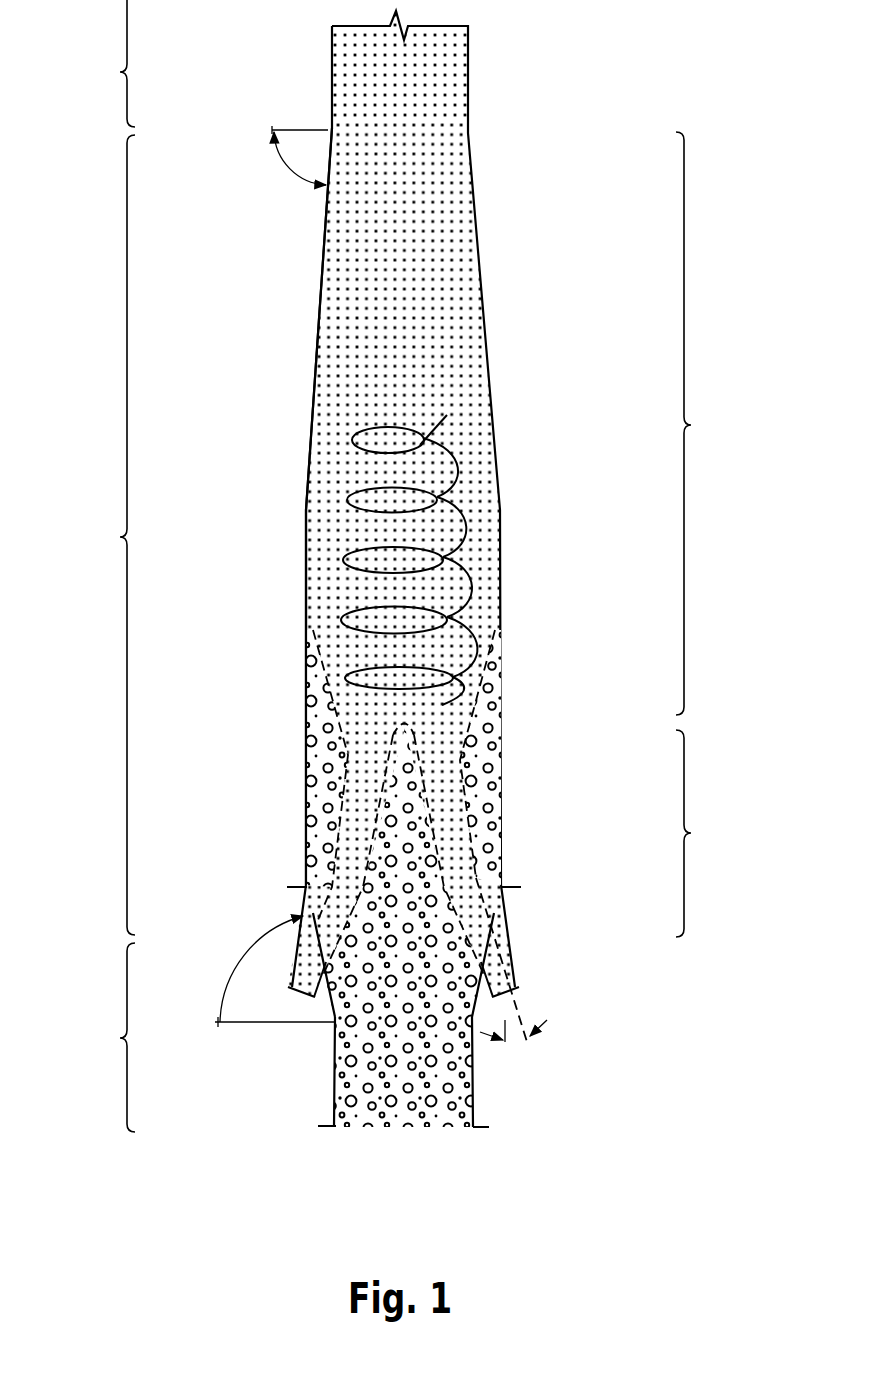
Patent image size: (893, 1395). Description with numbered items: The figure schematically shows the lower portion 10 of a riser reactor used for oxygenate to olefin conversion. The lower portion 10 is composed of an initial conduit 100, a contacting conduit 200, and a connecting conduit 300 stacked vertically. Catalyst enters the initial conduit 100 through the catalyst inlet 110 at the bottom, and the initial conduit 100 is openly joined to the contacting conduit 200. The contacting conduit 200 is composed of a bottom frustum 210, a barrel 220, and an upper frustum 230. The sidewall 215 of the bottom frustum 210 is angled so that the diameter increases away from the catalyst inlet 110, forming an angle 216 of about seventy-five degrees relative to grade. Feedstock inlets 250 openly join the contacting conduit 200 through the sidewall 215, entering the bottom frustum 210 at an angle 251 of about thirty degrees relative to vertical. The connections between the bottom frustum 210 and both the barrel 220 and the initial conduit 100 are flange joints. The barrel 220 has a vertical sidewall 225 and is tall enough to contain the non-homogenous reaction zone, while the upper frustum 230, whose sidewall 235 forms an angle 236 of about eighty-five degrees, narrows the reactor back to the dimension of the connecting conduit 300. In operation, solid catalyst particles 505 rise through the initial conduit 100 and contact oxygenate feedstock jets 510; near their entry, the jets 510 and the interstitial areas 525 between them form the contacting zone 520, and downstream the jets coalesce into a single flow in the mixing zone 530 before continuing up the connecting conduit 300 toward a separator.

The lower portion 10 is at (566, 135).
The initial conduit 100 is at (98, 1037).
The catalyst inlet 110 is at (358, 1127).
The contacting conduit 200 is at (98, 535).
The bottom frustum 210 is at (538, 992).
The sidewall 215 is at (515, 890).
The angle 216 is at (272, 928).
The barrel 220 is at (527, 703).
The sidewall 225 is at (316, 750).
The upper frustum 230 is at (514, 271).
The sidewall 235 is at (317, 332).
The angle 236 is at (292, 172).
The feedstock inlets 250 is at (500, 915).
The angle 251 is at (515, 1040).
The connecting conduit 300 is at (98, 63).
The solid catalyst particles 505 is at (447, 1065).
The oxygenate feedstock jets 510 is at (468, 855).
The contacting zone 520 is at (715, 833).
The interstitial areas 525 is at (407, 790).
The mixing zone 530 is at (715, 423).